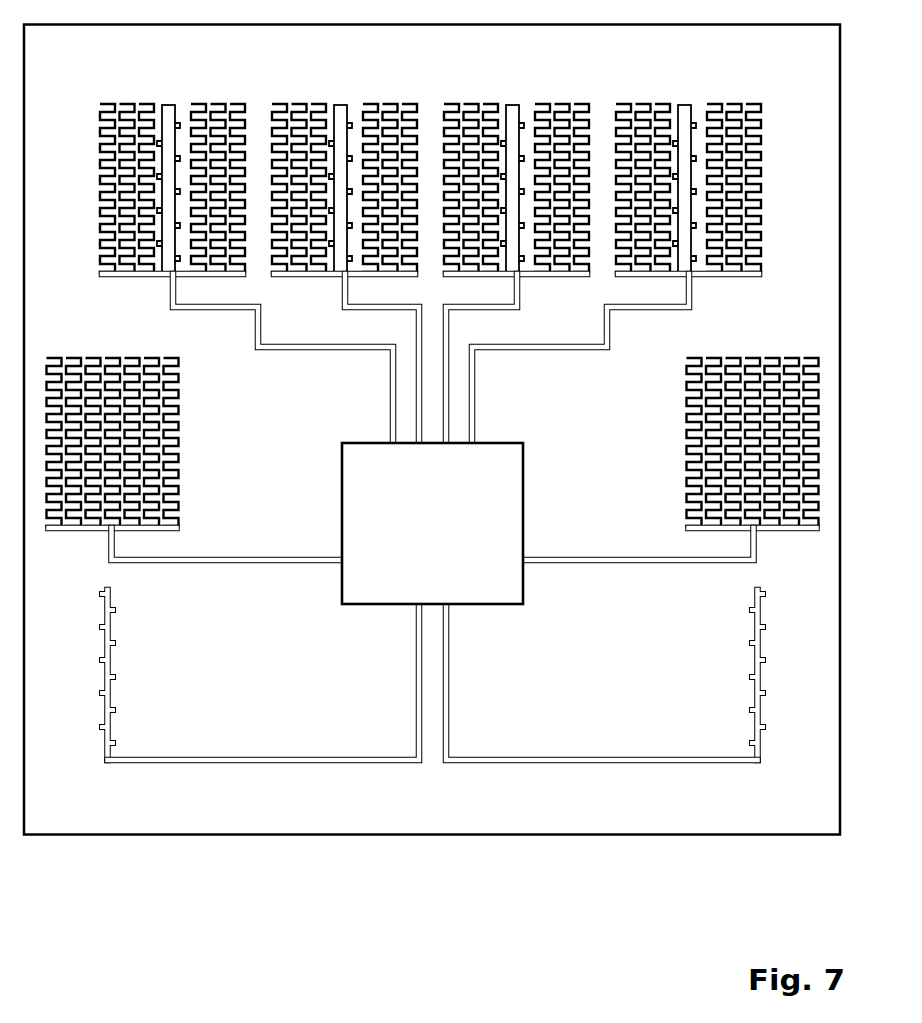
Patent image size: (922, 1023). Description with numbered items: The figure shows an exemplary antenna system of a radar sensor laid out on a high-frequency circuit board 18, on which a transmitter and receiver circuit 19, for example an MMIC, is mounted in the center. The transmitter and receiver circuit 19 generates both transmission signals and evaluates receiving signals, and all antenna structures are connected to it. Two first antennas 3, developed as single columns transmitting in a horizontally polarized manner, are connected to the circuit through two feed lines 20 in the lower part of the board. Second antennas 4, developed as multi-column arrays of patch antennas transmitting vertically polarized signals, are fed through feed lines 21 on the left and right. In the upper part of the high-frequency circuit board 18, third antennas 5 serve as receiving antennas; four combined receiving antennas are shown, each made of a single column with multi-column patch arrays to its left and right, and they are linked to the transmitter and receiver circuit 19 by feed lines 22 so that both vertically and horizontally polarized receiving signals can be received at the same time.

The first antennas 3 is at (112, 660).
The second antennas 4 is at (179, 447).
The third antennas 5 is at (151, 101).
The high-frequency circuit board 18 is at (637, 837).
The transmitter and receiver circuit 19 is at (505, 606).
The feed lines 20 is at (278, 756).
The feed lines 21 is at (277, 556).
The feed lines 22 is at (292, 351).